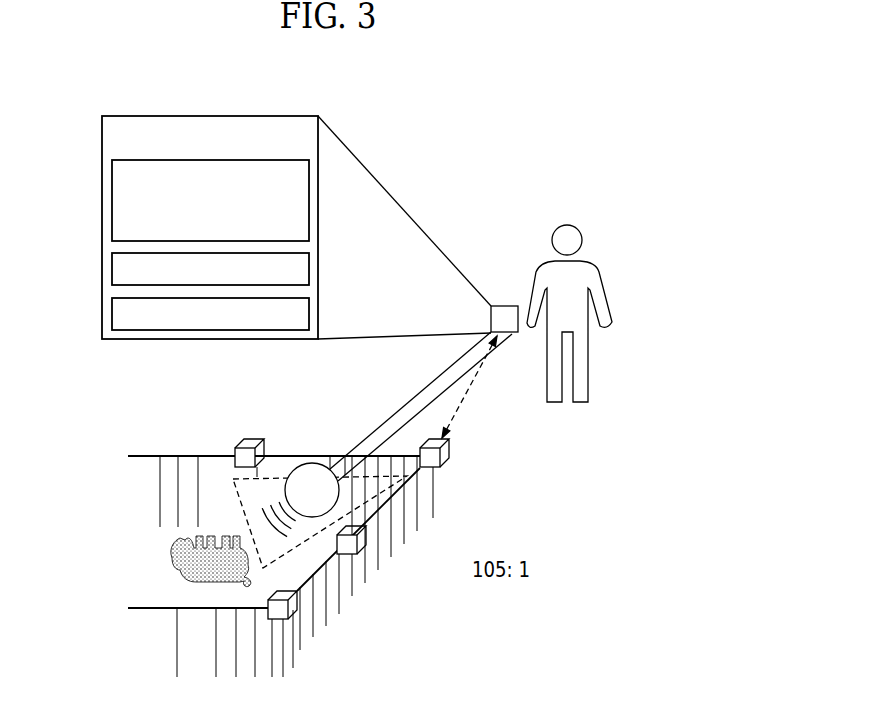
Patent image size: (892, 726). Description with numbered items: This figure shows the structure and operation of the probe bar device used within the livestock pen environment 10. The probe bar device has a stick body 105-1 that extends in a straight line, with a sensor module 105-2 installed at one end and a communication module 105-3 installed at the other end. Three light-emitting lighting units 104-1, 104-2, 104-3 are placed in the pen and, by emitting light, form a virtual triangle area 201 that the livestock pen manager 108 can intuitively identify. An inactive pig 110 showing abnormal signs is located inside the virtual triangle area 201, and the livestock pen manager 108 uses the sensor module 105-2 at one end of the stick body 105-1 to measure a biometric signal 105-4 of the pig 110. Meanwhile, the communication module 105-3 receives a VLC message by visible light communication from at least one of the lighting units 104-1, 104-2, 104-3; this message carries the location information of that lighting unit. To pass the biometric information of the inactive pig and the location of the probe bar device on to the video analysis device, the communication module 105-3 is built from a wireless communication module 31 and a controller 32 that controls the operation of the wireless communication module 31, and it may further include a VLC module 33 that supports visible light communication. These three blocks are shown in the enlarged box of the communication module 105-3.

The livestock management system / farm 10 is at (181, 711).
The wireless communication module 31 is at (112, 190).
The controller 32 is at (112, 268).
The VLC module 33 is at (112, 312).
The communication module 105-3 is at (244, 145).
The stick body 105-1 is at (397, 410).
The sensor module 105-2 is at (299, 461).
The biometric signal 105-4 is at (274, 499).
The livestock pen manager 108 is at (592, 262).
The light-emitting lighting unit 104-1 is at (240, 443).
The light-emitting lighting unit 104-2 is at (295, 618).
The light-emitting lighting unit 104-3 is at (446, 452).
The virtual triangle area 201 is at (292, 553).
The pig 110 is at (170, 558).